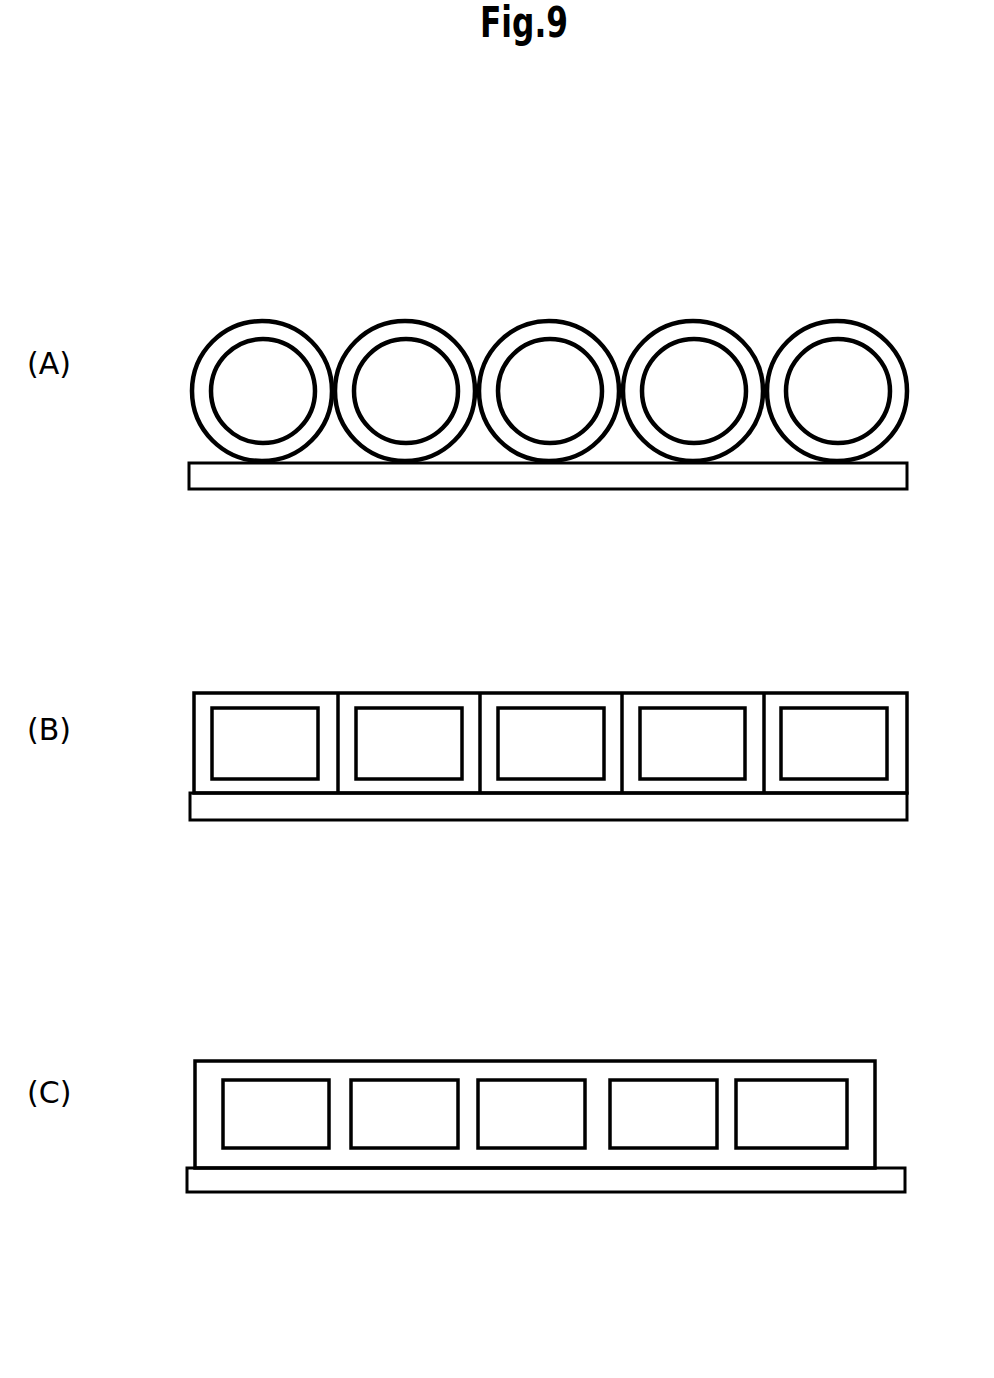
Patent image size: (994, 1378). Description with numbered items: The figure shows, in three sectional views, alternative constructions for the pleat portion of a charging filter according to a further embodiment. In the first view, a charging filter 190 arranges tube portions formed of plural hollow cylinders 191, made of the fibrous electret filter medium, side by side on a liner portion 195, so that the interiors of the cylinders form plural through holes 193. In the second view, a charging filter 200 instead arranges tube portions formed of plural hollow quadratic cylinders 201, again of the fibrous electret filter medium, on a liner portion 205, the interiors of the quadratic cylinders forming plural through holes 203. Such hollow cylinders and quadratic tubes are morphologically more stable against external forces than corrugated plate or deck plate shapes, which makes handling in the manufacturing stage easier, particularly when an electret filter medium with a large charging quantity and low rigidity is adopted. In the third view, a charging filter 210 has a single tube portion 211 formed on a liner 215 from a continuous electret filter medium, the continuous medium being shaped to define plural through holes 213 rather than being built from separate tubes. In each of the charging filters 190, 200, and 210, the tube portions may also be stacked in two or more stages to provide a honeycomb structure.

The charging filter 190 is at (243, 286).
The hollow cylinder 191 is at (408, 318).
The through hole 193 is at (421, 408).
The liner portion 195 is at (608, 473).
The charging filter 200 is at (243, 639).
The hollow quadratic cylinder 201 is at (440, 698).
The through hole 203 is at (408, 742).
The liner portion 205 is at (520, 806).
The charging filter 210 is at (242, 1010).
The tube portion 211 is at (438, 1070).
The through hole 213 is at (407, 1115).
The liner 215 is at (518, 1178).